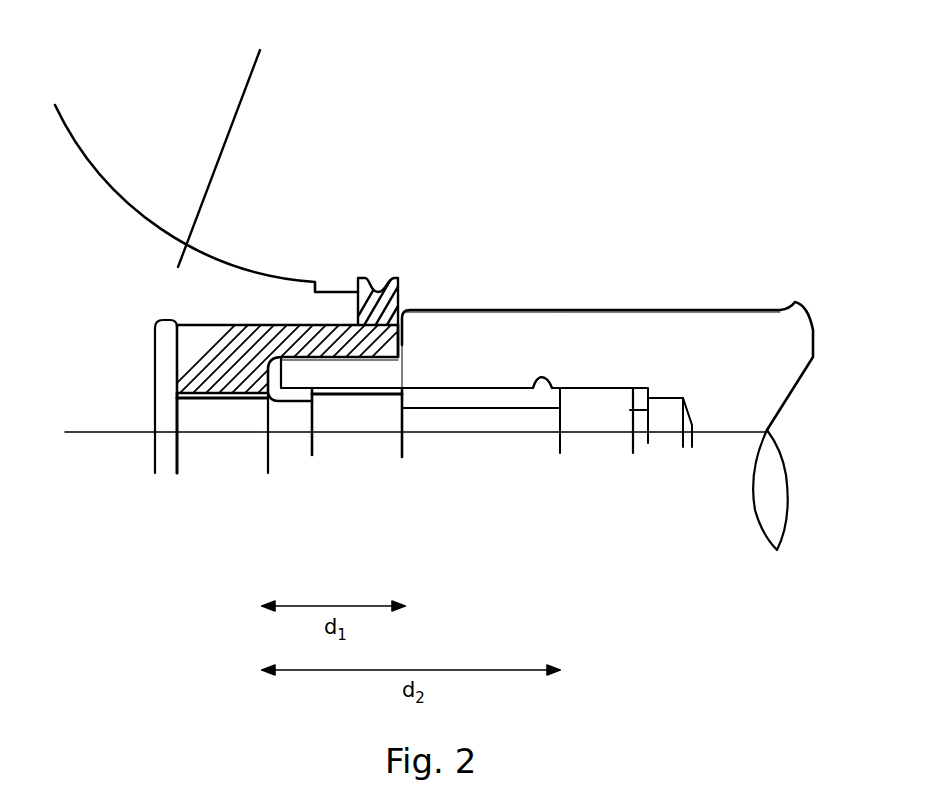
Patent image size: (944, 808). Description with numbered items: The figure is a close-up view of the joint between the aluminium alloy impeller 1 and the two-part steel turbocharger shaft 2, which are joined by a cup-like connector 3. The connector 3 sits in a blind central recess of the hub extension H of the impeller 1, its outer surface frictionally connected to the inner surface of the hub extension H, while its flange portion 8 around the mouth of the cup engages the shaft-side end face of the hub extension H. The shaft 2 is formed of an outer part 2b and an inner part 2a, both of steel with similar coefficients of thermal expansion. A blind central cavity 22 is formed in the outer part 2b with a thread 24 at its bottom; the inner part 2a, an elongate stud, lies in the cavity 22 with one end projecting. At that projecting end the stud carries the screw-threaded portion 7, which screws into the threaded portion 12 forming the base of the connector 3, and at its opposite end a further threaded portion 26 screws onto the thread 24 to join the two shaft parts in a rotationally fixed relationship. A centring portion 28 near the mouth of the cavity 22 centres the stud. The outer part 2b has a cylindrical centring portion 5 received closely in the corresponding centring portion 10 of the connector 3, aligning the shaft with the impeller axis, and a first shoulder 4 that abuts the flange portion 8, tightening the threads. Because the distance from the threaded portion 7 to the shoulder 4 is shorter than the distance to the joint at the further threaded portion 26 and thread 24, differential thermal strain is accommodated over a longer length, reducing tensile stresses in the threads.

The impeller 1 is at (87, 125).
The hub extension H is at (224, 141).
The turbocharger shaft 2 is at (737, 280).
The inner part of the shaft 2a is at (483, 427).
The outer part of the shaft 2b is at (592, 342).
The connector 3 is at (397, 278).
The first shoulder 4 is at (406, 333).
The centring portion of the shaft 5 is at (347, 367).
The screw-threaded portion of the shaft 7 is at (227, 470).
The flange portion 8 is at (402, 312).
The centring portion of the connector 10 is at (327, 333).
The threaded portion of the connector 12 is at (222, 363).
The blind central cavity 22 is at (433, 383).
The thread 24 is at (563, 388).
The further threaded portion 26 is at (600, 470).
The centring portion of the stud 28 is at (365, 471).